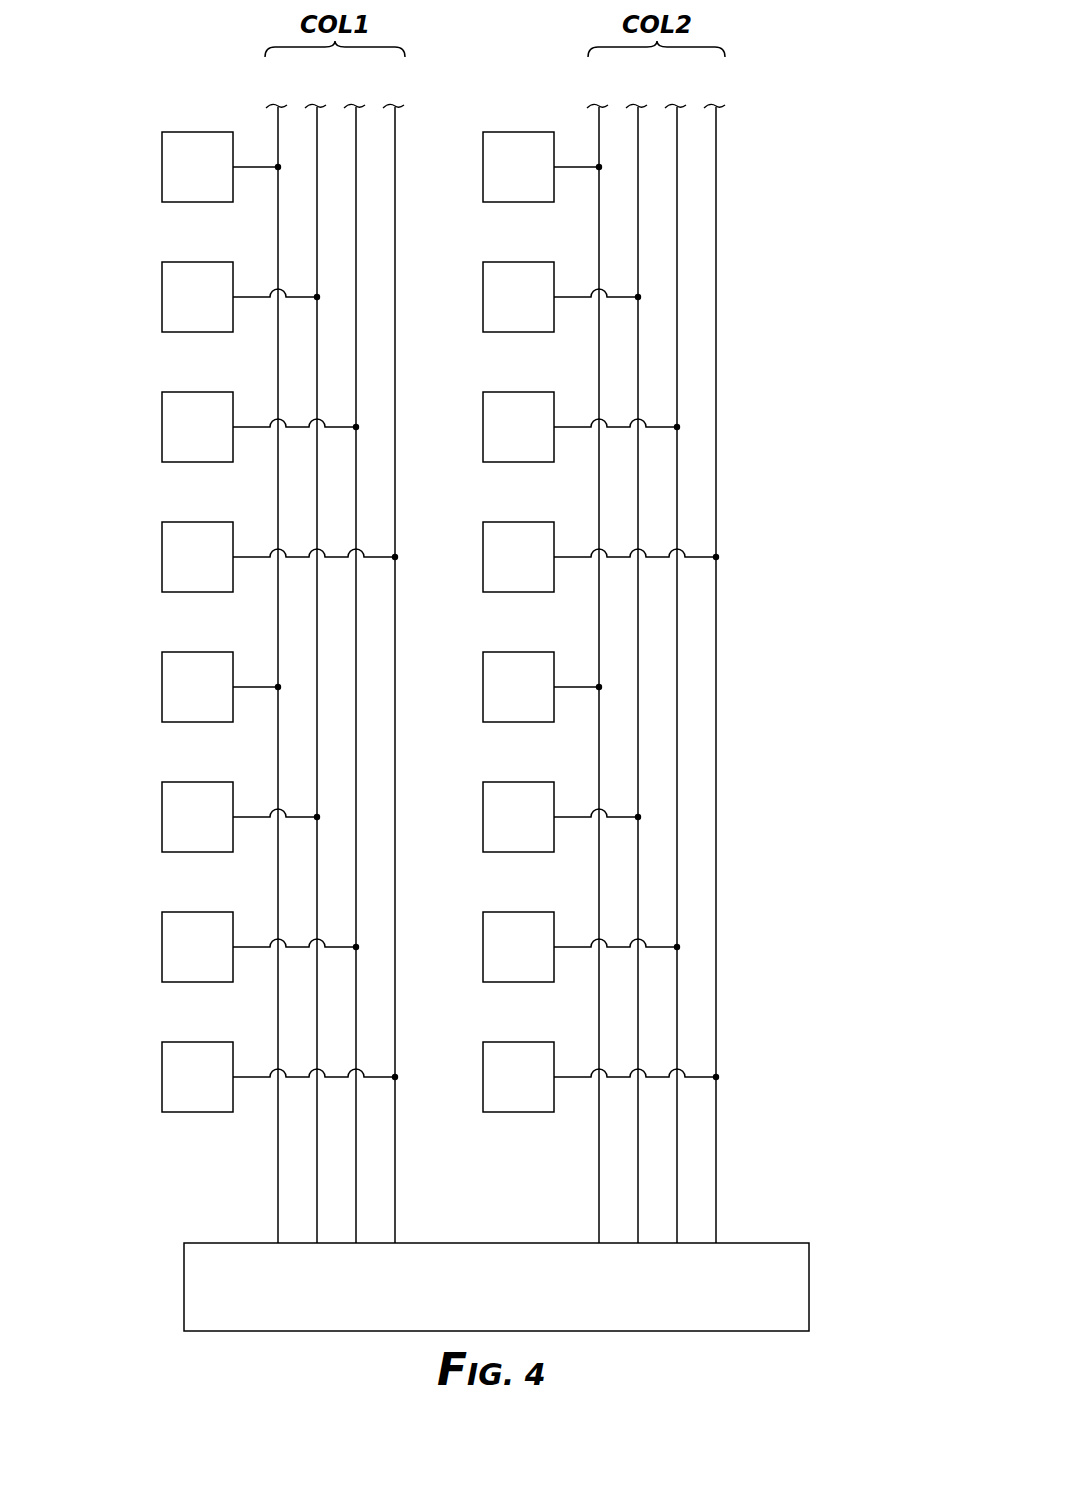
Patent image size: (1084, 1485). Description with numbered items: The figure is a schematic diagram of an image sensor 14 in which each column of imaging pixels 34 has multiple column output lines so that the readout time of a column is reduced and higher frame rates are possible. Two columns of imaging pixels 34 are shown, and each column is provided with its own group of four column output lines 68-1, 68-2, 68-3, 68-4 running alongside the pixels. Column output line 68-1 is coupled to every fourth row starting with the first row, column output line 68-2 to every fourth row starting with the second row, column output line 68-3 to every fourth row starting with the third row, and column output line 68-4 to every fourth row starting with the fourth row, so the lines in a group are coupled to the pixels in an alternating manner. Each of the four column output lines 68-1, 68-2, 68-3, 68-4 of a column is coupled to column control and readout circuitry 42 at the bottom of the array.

The image sensor 14 is at (870, 170).
The imaging pixels 34 is at (173, 262).
The column control and readout circuitry 42 is at (809, 1268).
The column output line 68-1 is at (278, 124).
The column output line 68-2 is at (317, 124).
The column output line 68-3 is at (356, 123).
The column output line 68-4 is at (395, 123).